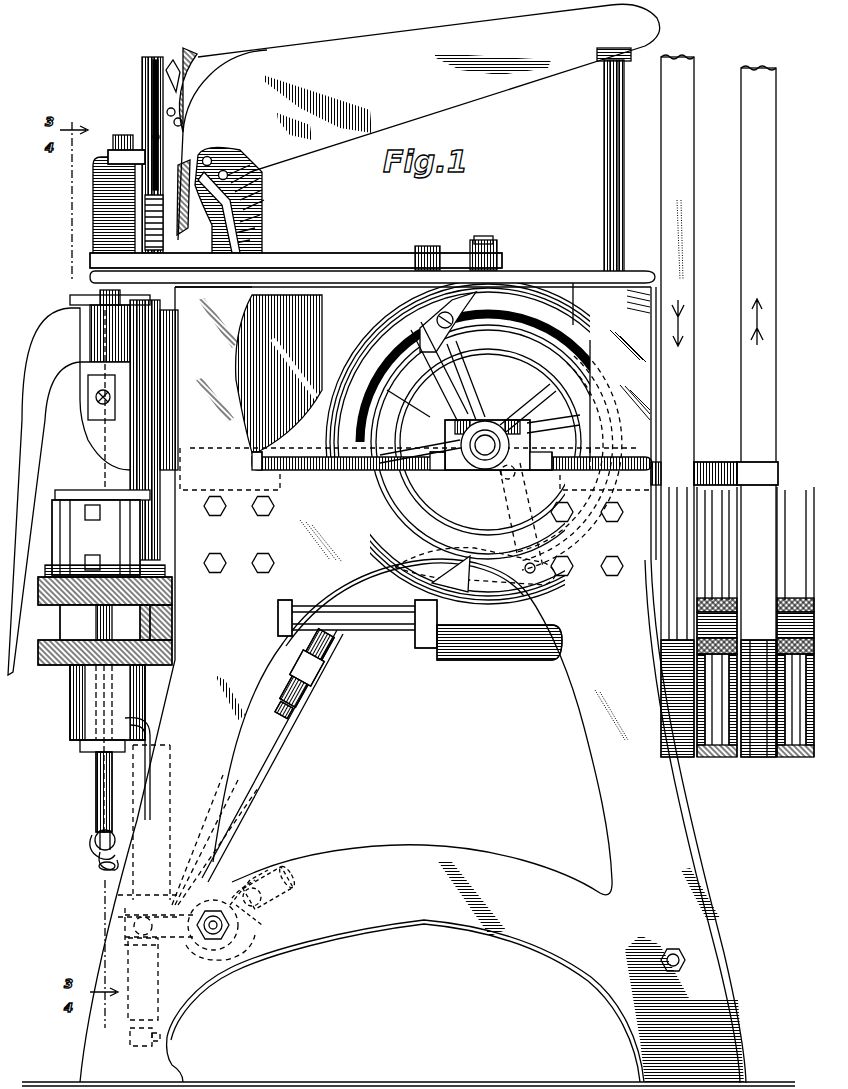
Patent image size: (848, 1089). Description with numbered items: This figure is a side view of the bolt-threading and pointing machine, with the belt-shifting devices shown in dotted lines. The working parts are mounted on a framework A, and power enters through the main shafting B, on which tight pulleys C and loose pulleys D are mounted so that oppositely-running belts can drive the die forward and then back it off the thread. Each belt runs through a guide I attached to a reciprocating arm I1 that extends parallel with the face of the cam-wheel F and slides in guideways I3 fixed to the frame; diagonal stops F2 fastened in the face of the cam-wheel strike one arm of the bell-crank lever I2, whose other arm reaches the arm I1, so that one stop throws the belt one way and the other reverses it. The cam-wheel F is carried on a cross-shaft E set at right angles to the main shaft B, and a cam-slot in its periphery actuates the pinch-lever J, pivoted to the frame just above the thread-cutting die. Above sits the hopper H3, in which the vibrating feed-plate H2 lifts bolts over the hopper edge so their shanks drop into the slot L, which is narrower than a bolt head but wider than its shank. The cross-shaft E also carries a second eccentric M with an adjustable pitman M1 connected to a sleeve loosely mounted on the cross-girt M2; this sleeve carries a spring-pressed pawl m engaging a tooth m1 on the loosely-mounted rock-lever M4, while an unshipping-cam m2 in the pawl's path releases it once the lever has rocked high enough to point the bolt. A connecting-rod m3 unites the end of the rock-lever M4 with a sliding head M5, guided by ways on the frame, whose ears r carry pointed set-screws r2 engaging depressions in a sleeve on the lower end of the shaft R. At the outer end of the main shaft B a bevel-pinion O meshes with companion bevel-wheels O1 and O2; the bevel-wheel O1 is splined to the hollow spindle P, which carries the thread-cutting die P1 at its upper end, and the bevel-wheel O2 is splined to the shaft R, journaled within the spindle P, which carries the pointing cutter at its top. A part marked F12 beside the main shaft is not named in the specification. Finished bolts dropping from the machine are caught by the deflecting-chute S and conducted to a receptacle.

The slot L is at (152, 141).
The vibrating feed-plate H2 is at (198, 129).
The hopper H3 is at (419, 138).
The pinch-lever J is at (372, 253).
The die P1 is at (85, 300).
The deflecting-chute S is at (44, 491).
The hollow spindle P is at (90, 470).
The framework A is at (408, 684).
The cam-wheel F is at (488, 442).
The cross-shaft E is at (483, 450).
The diagonal stops F2 is at (440, 306).
The second eccentric M is at (556, 412).
The bell-crank lever I2 is at (526, 512).
The guideways I3 is at (262, 456).
The guides I is at (768, 470).
The reciprocating arm I1 is at (722, 462).
The loose pulleys D is at (736, 636).
The tight pulleys C is at (737, 636).
The bevel-wheel O1 is at (58, 592).
The bevel-wheel O2 is at (58, 648).
The shaft R is at (96, 615).
The bevel-pinion O is at (155, 630).
The sliding head M5 is at (96, 836).
The ears r is at (98, 860).
The pointed set-screws r2 is at (100, 868).
The connecting-rod m3 is at (150, 815).
The main shafting B is at (380, 630).
The cylinder F12 is at (462, 586).
The adjustable pitman M1 is at (318, 658).
The cross-girt M2 is at (212, 936).
The unshipping-cam m2 is at (240, 958).
The tooth m1 is at (252, 915).
The spring-pressed pawl m is at (292, 892).
The rock-lever M4 is at (248, 884).